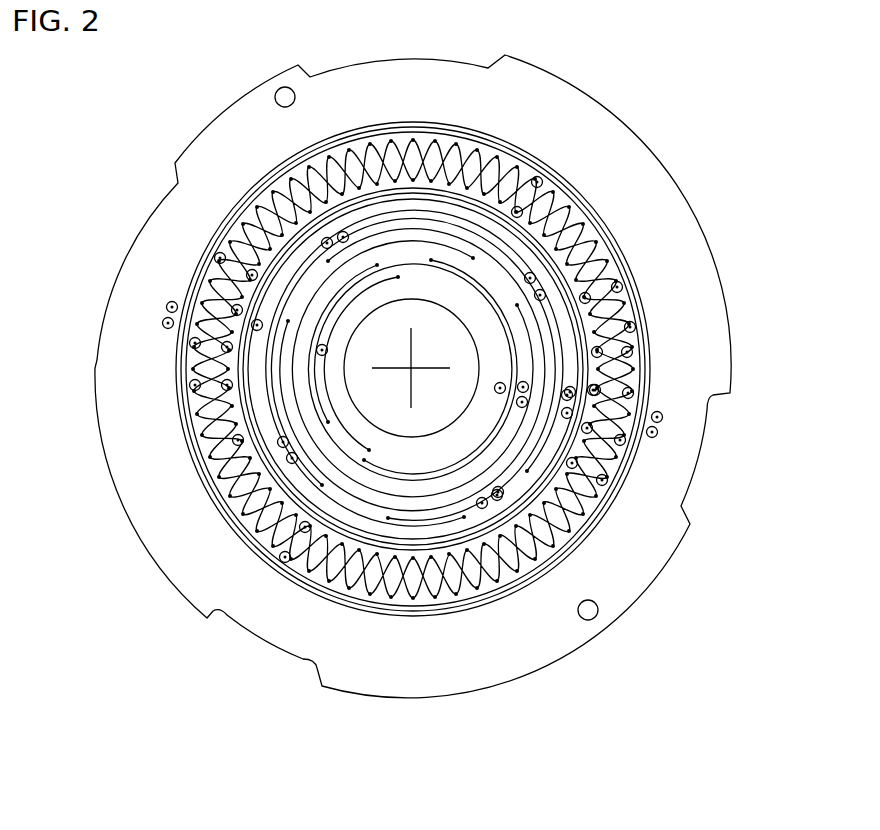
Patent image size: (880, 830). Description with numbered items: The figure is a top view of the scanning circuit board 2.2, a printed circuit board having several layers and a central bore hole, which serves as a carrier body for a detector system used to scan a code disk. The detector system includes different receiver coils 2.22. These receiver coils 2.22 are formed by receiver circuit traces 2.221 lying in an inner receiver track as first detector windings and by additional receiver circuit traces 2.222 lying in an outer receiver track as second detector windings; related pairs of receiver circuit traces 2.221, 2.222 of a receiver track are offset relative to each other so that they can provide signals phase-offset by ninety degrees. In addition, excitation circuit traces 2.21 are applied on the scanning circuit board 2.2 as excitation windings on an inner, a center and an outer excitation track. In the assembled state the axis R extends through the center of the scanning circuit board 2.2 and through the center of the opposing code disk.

The scanning circuit board 2.2 is at (154, 213).
The excitation circuit traces 2.21 is at (493, 308).
The receiver coils 2.22 is at (385, 685).
The receiver circuit traces 2.221 is at (443, 512).
The additional receiver circuit traces 2.222 is at (468, 540).
The axis R is at (410, 368).